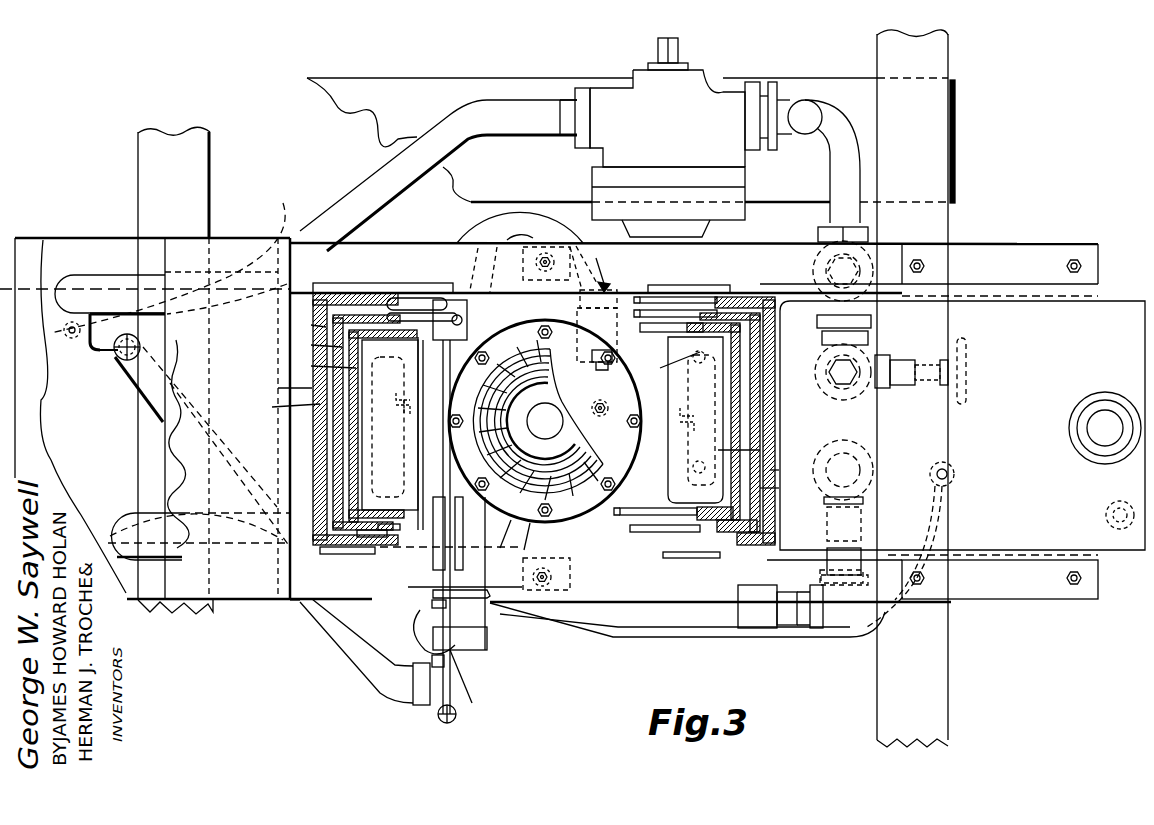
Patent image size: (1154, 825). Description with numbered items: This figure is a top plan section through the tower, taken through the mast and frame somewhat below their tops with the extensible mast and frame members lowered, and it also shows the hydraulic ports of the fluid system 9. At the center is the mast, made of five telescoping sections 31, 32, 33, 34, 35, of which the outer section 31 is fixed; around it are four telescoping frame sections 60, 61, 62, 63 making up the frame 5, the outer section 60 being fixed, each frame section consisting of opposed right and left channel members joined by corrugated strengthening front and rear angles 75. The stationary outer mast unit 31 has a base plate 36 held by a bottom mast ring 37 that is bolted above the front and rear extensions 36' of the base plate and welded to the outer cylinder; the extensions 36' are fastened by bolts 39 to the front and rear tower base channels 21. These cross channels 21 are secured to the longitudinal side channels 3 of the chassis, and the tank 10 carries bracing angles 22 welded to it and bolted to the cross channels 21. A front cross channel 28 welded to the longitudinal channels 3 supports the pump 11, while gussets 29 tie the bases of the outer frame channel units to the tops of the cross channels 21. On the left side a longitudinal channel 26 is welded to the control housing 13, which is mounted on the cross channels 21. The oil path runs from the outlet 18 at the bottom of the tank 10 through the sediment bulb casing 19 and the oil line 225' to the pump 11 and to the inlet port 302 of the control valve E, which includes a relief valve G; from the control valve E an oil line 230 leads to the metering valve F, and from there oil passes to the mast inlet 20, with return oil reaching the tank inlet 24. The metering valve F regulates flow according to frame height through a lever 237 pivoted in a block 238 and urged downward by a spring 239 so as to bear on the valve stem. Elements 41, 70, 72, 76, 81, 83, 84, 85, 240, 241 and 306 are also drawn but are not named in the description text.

The longitudinal side channel 3 is at (198, 140).
The frame 5 is at (546, 410).
The hydraulic system 9 is at (140, 404).
The tank 10 is at (1106, 298).
The pump 11 is at (695, 92).
The control housing 13 is at (221, 248).
The outlet 18 is at (865, 370).
The sediment bulb casing 19 is at (857, 262).
The mast inlet 20 is at (612, 408).
The tower base channel 21 is at (410, 242).
The bracing angle 22 is at (932, 421).
The tank inlet 24 is at (874, 470).
The longitudinal channel 26 is at (254, 624).
The front cross channel 28 is at (800, 82).
The gusset 29 is at (778, 292).
The outer mast section 31 is at (545, 421).
The mast section 32 is at (545, 424).
The mast section 33 is at (536, 536).
The mast section 34 is at (507, 534).
The mast section 35 is at (538, 420).
The base plate 36 is at (584, 353).
The bottom mast ring 37 is at (614, 401).
The bolt 39 is at (560, 258).
The hub 41 is at (543, 417).
The outer frame section 60 is at (326, 452).
The frame section 61 is at (338, 432).
The frame section 62 is at (352, 415).
The frame section 63 is at (366, 386).
The coil 70 is at (543, 424).
The spacer 72 is at (559, 481).
The strengthening angle 75 is at (680, 296).
The core 76 is at (404, 456).
The spacer 81 is at (321, 345).
The lamination 83 is at (732, 295).
The clamp plate 84 is at (338, 290).
The spacer 85 is at (749, 471).
The oil line 225' is at (438, 175).
The oil line 230 is at (370, 672).
The lever 237 is at (475, 340).
The block 238 is at (428, 612).
The spring 239 is at (458, 716).
The rod 240 is at (462, 320).
The block 241 is at (445, 298).
The inlet port 302 is at (92, 352).
The port 306 is at (120, 360).
The base plate extension 36' is at (531, 452).
The control valve E is at (86, 340).
The metering valve F is at (429, 636).
The relief valve G is at (110, 356).